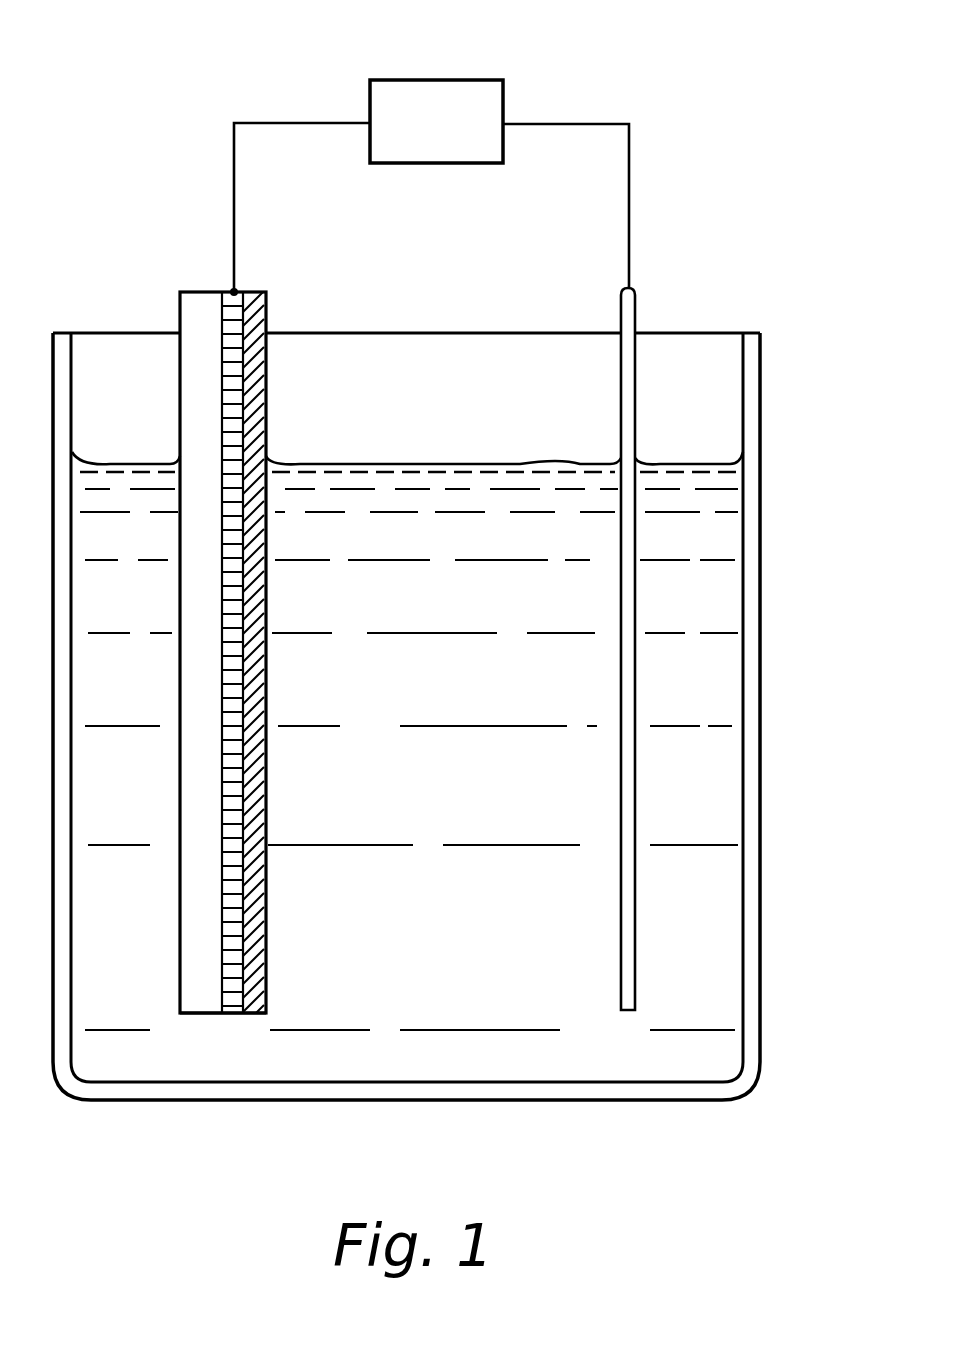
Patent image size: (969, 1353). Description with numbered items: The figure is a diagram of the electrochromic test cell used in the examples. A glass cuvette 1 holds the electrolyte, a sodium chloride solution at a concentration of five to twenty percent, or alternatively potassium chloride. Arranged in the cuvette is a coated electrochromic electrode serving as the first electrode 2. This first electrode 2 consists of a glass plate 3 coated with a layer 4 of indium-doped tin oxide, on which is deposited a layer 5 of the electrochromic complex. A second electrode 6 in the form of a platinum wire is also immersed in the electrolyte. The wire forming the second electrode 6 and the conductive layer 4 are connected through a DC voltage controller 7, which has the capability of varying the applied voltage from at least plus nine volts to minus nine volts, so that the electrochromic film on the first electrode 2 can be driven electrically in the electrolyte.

The glass cuvette 1 is at (761, 895).
The first electrode 2 is at (199, 1016).
The glass plate 3 is at (200, 382).
The layer of indium-doped tin oxide 4 is at (230, 324).
The layer of the electrochromic complex 5 is at (263, 310).
The second electrode 6 is at (637, 314).
The DC voltage controller 7 is at (465, 80).